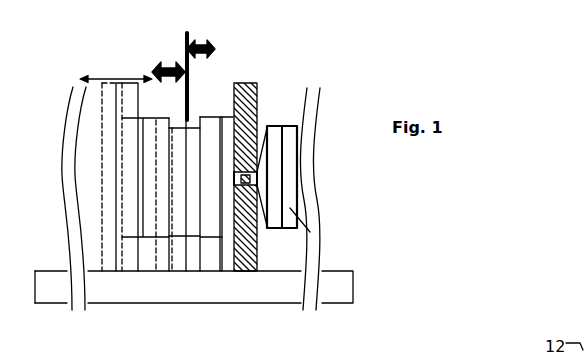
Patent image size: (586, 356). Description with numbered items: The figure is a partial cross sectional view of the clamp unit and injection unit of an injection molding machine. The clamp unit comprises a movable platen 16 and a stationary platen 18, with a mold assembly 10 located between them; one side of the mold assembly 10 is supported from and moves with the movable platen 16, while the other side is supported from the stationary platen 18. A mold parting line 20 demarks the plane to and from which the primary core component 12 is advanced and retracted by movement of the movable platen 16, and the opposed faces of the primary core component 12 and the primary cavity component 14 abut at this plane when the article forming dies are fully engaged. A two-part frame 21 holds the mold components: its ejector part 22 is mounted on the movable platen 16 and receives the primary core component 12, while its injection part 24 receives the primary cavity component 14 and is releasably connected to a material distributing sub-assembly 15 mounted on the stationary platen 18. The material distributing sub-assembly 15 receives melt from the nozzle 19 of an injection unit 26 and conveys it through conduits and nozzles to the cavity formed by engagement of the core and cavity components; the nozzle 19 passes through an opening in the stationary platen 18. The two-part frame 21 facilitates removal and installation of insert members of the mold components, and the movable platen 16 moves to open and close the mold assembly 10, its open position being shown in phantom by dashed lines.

The mold assembly 10 is at (215, 65).
The primary core component 12 is at (181, 230).
The primary cavity component 14 is at (193, 230).
The material distributing sub-assembly 15 is at (228, 230).
The movable platen 16 is at (133, 88).
The stationary platen 18 is at (254, 85).
The nozzle 19 is at (257, 122).
The mold parting line 20 is at (187, 33).
The two-part frame 21 is at (171, 117).
The ejector part 22 is at (144, 118).
The injection part 24 is at (212, 230).
The injection unit 26 is at (310, 232).